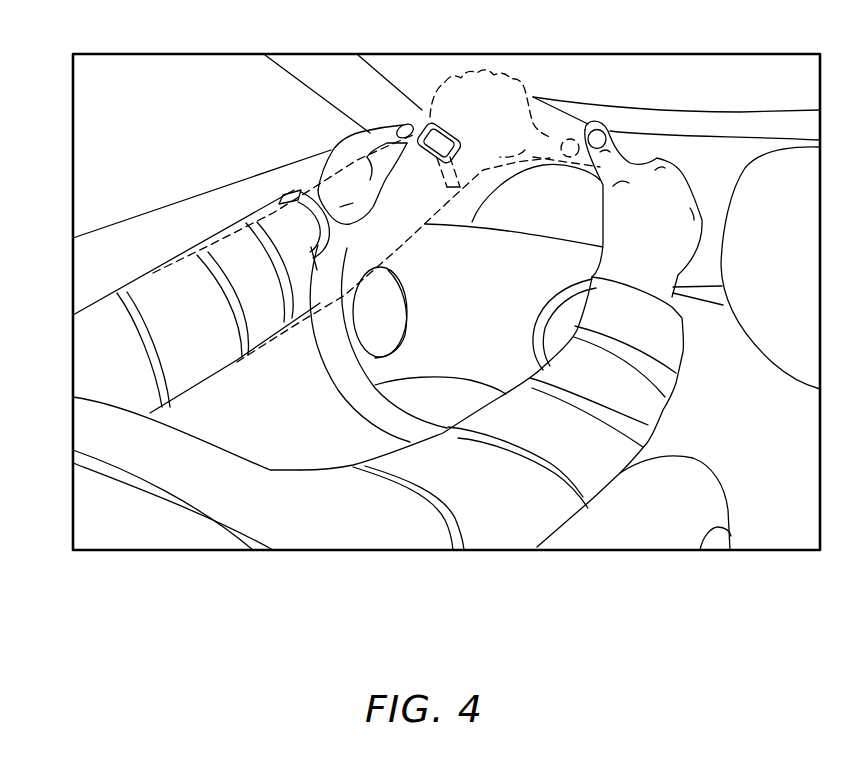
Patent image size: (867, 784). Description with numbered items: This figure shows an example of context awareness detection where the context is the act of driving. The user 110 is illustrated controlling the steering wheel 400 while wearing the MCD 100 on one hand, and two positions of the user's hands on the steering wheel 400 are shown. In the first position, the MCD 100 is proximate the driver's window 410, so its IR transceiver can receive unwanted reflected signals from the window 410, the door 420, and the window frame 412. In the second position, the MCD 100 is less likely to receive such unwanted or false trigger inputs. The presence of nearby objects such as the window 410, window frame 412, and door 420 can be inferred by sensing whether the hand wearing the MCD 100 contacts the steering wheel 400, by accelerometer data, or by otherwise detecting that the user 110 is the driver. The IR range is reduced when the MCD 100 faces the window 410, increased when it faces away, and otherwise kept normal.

The MCD 100 is at (292, 196).
The user 110 is at (196, 389).
The steering wheel 400 is at (356, 385).
The window 410 is at (212, 66).
The window frame 412 is at (370, 72).
The door 420 is at (87, 266).